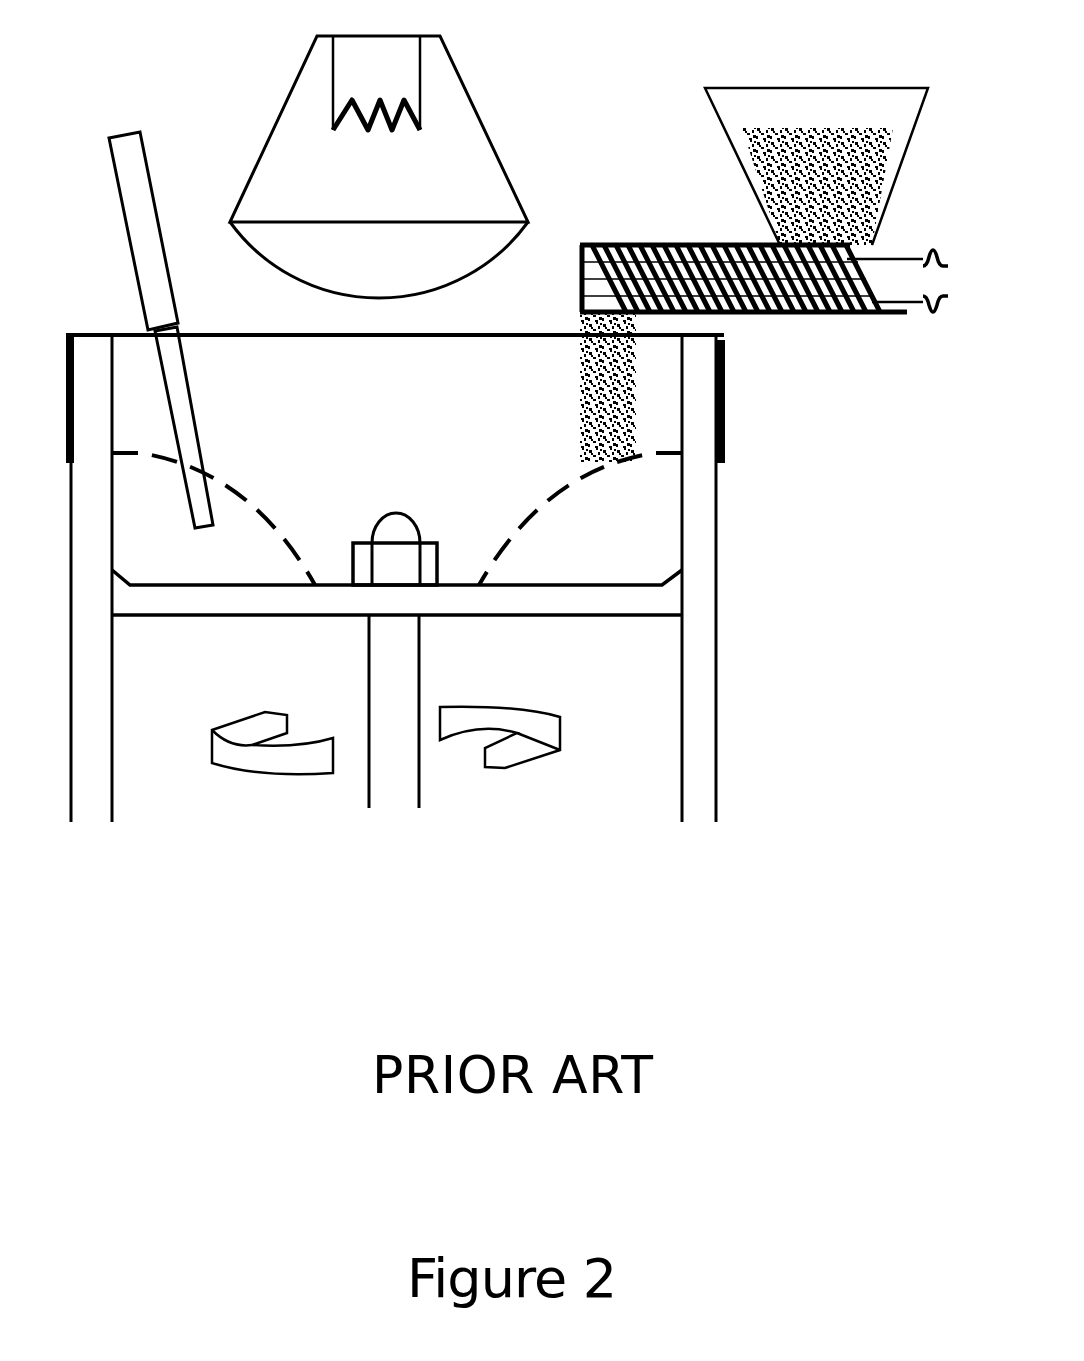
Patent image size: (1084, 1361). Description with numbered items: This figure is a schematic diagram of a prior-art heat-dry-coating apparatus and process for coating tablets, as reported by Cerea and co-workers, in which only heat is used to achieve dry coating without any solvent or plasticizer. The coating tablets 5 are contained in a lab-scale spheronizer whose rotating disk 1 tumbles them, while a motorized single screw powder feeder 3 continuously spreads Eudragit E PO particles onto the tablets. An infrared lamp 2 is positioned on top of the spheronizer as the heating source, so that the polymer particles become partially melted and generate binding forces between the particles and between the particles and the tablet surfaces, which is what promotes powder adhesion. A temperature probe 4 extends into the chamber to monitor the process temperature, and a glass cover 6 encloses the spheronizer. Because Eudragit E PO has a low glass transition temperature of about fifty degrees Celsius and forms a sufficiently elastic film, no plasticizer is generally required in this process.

The rotating disk 1 is at (395, 578).
The infrared lamp 2 is at (396, 167).
The powder feeder 3 is at (764, 275).
The temperature probe 4 is at (178, 330).
The coating tablets 5 is at (397, 519).
The glass cover 6 is at (430, 418).